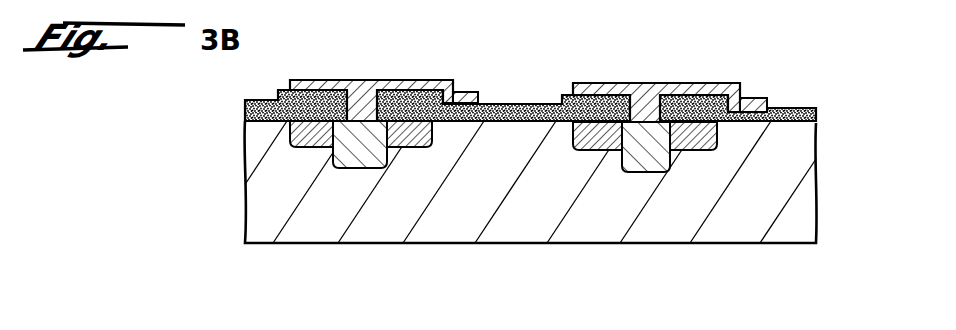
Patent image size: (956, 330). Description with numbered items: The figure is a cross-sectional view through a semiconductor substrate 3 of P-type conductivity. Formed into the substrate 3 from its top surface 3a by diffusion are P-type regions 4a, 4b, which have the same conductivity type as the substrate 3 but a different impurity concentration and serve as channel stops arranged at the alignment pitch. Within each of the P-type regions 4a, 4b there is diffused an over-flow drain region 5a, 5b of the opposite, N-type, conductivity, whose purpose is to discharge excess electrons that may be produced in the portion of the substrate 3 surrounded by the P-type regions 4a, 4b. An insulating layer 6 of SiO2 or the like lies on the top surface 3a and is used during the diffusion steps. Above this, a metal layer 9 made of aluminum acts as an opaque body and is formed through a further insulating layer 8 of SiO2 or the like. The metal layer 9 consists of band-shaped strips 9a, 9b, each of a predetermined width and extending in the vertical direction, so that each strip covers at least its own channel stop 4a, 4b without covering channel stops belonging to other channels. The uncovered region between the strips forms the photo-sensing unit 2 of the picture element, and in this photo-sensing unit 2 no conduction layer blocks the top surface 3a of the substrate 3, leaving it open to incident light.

The photo-sensing unit 2 is at (518, 104).
The semiconductor substrate 3 is at (798, 177).
The top surface 3a is at (785, 107).
The P-type region 4a is at (318, 146).
The P-type region 4b is at (703, 150).
The over-flow drain region 5a is at (354, 168).
The over-flow drain region 5b is at (637, 172).
The insulating layer 6 is at (290, 90).
The insulating layer 8 is at (745, 98).
The metal layer 9 is at (515, 86).
The band-shaped strip 9a is at (371, 74).
The band-shaped strip 9b is at (678, 78).